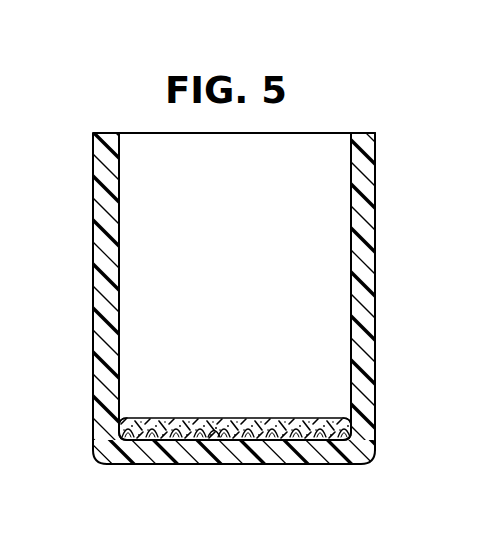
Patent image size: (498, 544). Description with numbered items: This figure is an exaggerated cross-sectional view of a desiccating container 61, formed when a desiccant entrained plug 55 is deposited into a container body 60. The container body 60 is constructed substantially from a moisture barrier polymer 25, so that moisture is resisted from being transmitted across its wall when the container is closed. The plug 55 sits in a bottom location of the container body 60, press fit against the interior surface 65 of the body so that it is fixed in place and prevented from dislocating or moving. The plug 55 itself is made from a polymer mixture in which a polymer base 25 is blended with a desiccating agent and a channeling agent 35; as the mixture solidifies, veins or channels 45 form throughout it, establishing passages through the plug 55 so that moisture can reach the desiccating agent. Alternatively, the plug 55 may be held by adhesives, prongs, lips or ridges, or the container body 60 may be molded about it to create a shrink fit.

The desiccating container 61 is at (394, 202).
The container body 60 is at (375, 328).
The interior surface 65 is at (350, 360).
The polymer 25 is at (105, 330).
The plug 55 is at (263, 418).
The channeling agent 35 is at (178, 438).
The channels 45 is at (217, 433).